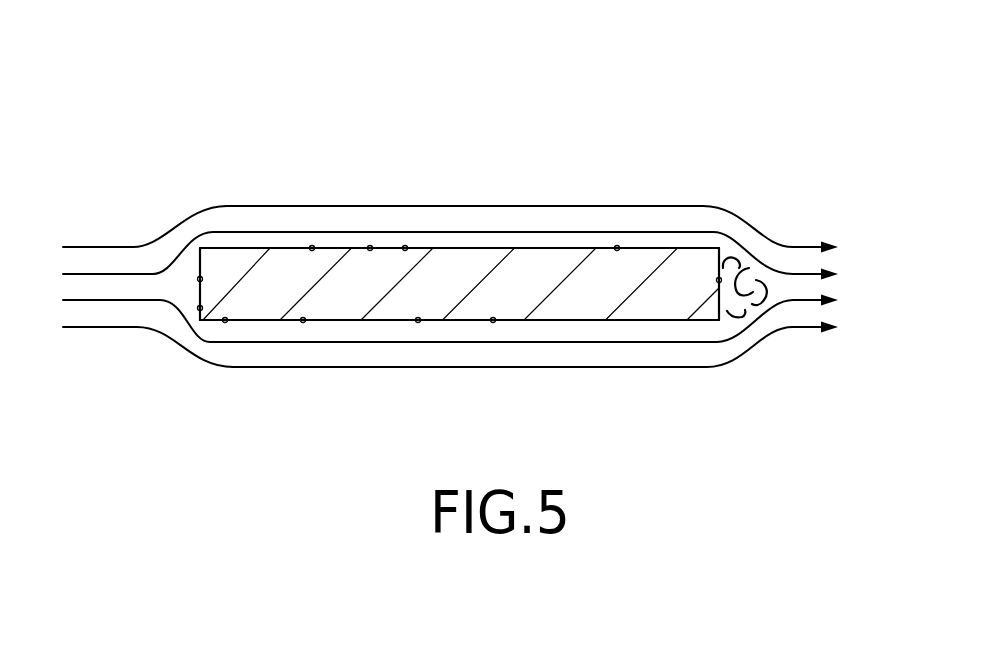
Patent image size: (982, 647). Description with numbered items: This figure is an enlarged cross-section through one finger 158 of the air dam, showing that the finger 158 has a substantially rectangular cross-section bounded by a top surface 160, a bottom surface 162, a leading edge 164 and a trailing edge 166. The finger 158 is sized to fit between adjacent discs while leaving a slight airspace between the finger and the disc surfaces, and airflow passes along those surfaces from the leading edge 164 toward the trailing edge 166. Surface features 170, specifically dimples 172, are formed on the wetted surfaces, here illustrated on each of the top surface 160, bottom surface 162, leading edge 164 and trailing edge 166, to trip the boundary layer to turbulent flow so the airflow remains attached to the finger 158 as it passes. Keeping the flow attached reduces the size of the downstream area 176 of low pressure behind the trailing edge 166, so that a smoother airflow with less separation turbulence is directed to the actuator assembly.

The finger 158 is at (220, 133).
The top surface 160 is at (650, 248).
The bottom surface 162 is at (652, 322).
The leading edge 164 is at (198, 286).
The trailing edge 166 is at (723, 318).
The surface features 170 is at (371, 250).
The dimples 172 is at (225, 322).
The downstream area of low pressure 176 is at (748, 277).